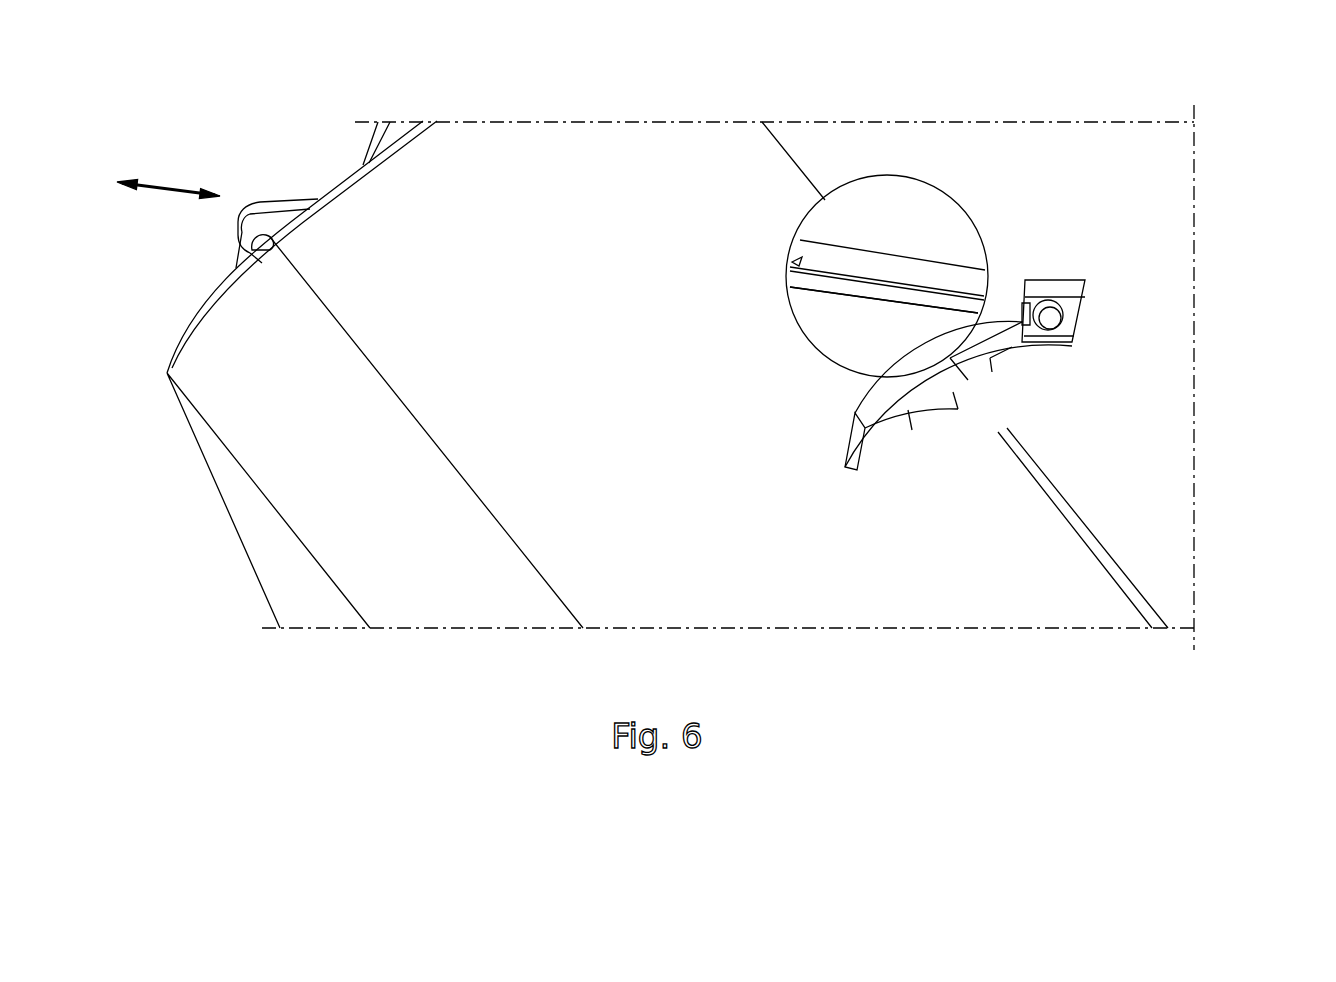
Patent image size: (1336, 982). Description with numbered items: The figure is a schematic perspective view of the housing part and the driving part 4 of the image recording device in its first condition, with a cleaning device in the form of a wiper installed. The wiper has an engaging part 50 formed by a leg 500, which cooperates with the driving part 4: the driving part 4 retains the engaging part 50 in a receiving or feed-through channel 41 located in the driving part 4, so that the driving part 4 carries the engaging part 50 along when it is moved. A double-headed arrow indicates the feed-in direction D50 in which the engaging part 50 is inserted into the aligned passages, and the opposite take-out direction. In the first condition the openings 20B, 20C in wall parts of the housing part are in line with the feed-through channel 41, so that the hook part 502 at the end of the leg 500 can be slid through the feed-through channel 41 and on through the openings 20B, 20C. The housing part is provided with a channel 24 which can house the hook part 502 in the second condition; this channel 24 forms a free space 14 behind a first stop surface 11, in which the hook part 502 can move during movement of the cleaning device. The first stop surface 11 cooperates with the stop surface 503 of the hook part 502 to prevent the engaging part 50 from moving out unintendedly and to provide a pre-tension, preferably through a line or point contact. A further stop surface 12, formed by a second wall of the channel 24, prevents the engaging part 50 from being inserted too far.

The driving part 4 is at (390, 135).
The second feed-through channel 41 is at (885, 255).
The engaging part 50 is at (892, 297).
The leg 500 is at (884, 300).
The opening 20B is at (795, 278).
The opening 20C is at (1046, 284).
The further stop surface 12 is at (1063, 303).
The hook part 502 is at (1052, 318).
The stop surface 503 is at (1008, 313).
The first stop surface 11 is at (1008, 355).
The free space 14 is at (938, 450).
The channel 24 is at (888, 455).
The feed-in direction D50 is at (177, 183).